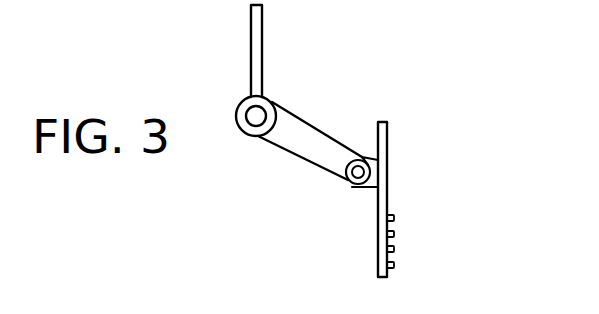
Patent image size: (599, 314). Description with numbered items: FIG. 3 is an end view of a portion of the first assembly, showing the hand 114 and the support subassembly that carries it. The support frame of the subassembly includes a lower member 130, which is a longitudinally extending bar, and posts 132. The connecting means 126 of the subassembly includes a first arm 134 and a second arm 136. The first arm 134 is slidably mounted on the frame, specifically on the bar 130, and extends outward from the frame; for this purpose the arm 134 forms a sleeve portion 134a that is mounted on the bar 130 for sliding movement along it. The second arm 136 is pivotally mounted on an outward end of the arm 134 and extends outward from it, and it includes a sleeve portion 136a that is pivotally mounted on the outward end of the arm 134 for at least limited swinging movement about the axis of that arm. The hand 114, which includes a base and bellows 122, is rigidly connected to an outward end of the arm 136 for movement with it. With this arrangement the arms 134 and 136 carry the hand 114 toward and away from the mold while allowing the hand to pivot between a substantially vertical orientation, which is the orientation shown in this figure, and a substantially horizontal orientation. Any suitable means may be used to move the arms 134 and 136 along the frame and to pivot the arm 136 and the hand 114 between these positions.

The hand 114 is at (394, 154).
The bellows 122 is at (394, 234).
The connecting means 126 is at (290, 83).
The lower member 130 is at (253, 117).
The posts 132 is at (252, 43).
The first arm 134 is at (293, 146).
The sleeve portion 134a is at (375, 157).
The second arm 136 is at (370, 190).
The sleeve portion 136a is at (355, 184).